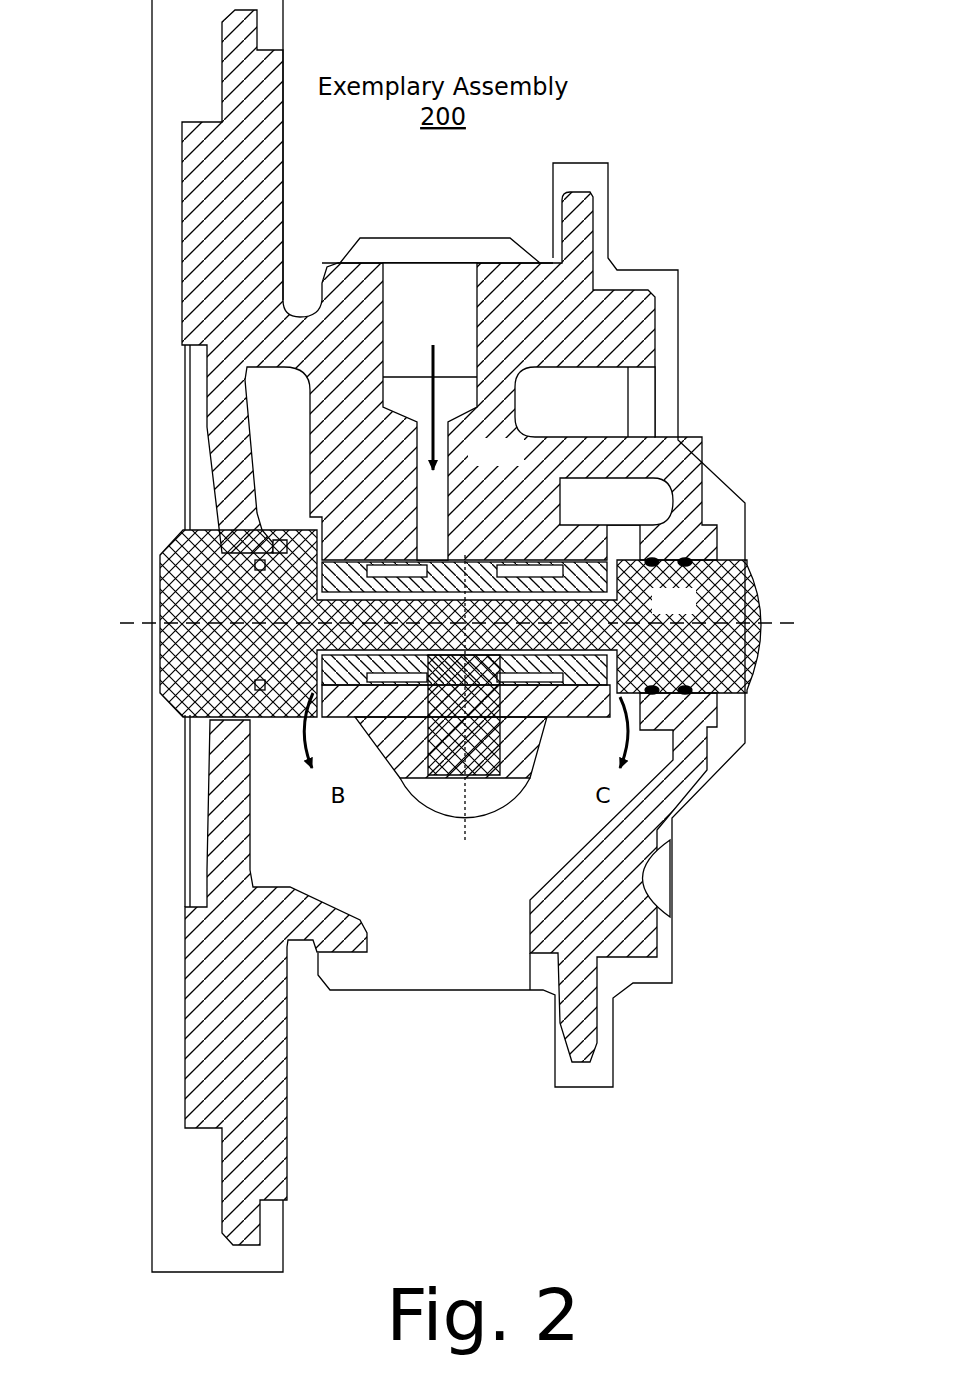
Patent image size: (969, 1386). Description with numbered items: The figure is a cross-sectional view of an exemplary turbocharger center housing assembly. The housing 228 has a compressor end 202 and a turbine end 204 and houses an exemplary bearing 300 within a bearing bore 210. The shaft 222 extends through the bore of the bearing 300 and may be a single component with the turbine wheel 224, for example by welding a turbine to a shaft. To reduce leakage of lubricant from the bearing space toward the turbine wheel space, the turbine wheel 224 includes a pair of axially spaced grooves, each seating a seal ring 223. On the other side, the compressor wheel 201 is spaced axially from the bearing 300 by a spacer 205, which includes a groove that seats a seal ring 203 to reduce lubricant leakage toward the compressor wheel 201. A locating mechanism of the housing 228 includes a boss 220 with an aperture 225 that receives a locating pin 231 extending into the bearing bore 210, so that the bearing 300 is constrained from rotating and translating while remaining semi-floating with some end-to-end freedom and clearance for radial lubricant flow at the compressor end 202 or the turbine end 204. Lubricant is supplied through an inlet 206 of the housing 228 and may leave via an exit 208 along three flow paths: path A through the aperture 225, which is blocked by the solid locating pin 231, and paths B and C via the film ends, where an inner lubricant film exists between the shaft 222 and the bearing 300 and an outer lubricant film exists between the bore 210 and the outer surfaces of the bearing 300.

The compressor wheel 201 is at (187, 582).
The compressor end 202 is at (130, 519).
The seal ring 203 is at (247, 693).
The turbine end 204 is at (782, 576).
The spacer 205 is at (238, 665).
The inlet 206 is at (415, 242).
The exit 208 is at (436, 1016).
The bearing bore 210 is at (530, 690).
The boss 220 is at (400, 787).
The shaft 222 is at (465, 623).
The seal ring 223 is at (687, 692).
The turbine wheel 224 is at (760, 653).
The aperture 225 is at (484, 792).
The housing 228 is at (562, 378).
The locating pin 231 is at (438, 782).
The bearing 300 is at (682, 626).